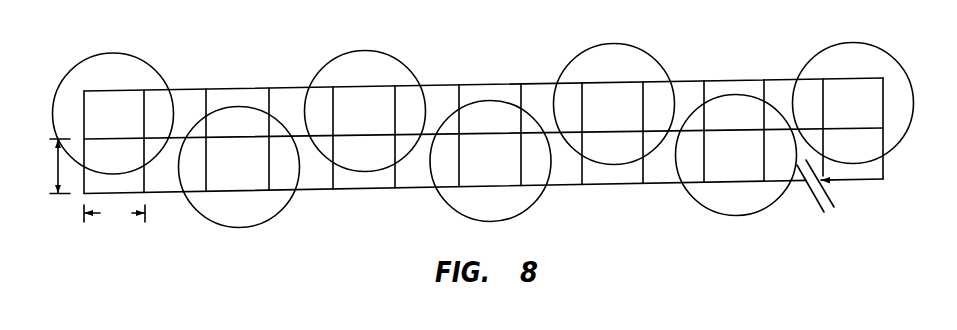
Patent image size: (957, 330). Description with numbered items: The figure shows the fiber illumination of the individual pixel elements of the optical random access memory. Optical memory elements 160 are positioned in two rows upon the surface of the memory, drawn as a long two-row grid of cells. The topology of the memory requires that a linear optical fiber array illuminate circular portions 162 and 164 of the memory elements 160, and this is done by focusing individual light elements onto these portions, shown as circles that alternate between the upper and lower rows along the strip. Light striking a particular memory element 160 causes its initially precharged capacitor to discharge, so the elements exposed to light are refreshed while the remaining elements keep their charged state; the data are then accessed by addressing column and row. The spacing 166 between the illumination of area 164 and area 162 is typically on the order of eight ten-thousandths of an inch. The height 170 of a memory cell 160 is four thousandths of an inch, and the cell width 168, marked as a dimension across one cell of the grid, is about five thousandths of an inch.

The optical memory elements 160 is at (883, 180).
The circular portion 162 is at (825, 44).
The circular portion 164 is at (749, 216).
The spacing 166 is at (806, 196).
The column pitch dimension 168 is at (117, 213).
The height 170 is at (57, 168).